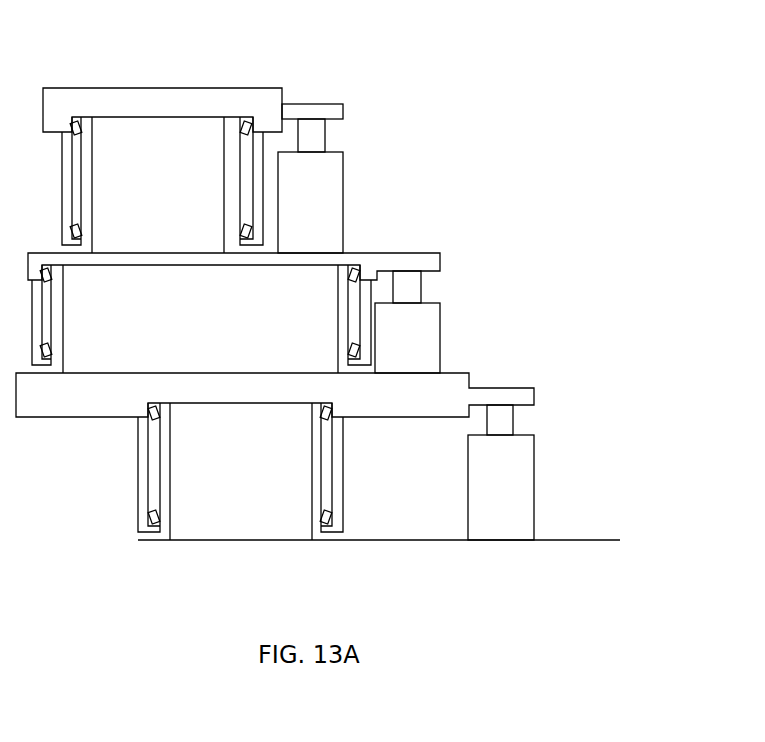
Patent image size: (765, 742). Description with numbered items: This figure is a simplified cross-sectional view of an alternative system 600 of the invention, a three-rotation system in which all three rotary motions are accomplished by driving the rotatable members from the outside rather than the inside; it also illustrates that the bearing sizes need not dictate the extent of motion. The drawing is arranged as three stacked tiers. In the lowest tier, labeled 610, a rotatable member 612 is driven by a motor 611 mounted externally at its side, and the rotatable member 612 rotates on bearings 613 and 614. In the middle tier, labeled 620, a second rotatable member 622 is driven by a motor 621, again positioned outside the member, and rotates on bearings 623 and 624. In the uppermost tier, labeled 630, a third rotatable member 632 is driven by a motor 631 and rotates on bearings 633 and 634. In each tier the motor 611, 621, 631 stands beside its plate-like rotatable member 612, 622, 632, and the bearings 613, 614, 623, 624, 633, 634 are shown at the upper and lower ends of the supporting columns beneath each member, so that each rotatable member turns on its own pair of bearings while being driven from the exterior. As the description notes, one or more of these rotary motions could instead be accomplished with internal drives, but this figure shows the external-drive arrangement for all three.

The system 600 is at (439, 153).
The first (bottom) stage 610 is at (550, 468).
The motor 611 is at (535, 518).
The rotatable member 612 is at (378, 418).
The bearing 613 is at (168, 415).
The bearing 614 is at (166, 518).
The second (middle) stage 620 is at (460, 320).
The motor 621 is at (447, 345).
The second rotatable member 622 is at (256, 281).
The bearing 623 is at (58, 272).
The bearing 624 is at (56, 355).
The third (top) stage 630 is at (350, 196).
The motor 631 is at (333, 167).
The third rotatable member 632 is at (200, 88).
The bearing 633 is at (88, 127).
The bearing 634 is at (88, 232).